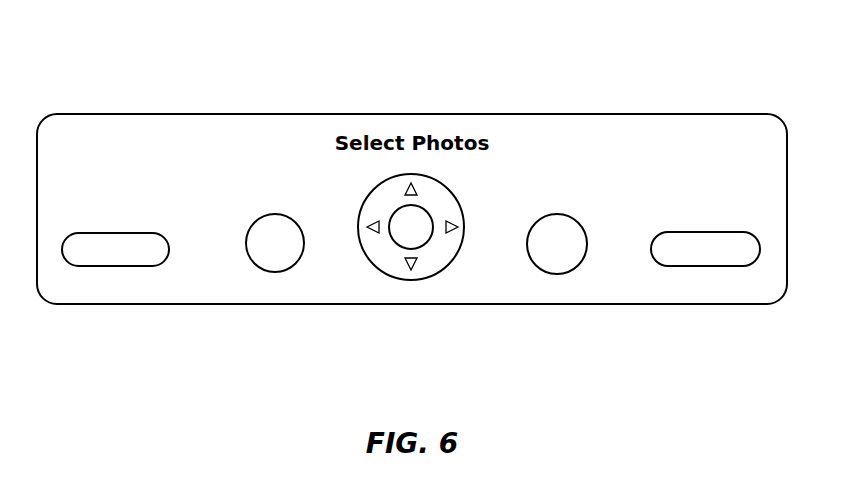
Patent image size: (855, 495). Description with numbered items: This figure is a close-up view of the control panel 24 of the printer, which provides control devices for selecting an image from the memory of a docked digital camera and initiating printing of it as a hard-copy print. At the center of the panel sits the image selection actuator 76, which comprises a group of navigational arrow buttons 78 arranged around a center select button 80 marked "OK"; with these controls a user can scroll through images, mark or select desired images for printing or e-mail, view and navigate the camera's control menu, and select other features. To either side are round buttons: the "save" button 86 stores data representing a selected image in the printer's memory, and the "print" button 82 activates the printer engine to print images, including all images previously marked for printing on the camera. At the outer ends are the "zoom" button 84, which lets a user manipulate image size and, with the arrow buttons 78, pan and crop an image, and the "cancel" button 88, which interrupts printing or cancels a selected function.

The control panel 24 is at (201, 82).
The image selection actuator 76 is at (363, 194).
The navigational arrow buttons 78 is at (447, 224).
The center select button 80 is at (420, 240).
The print button 82 is at (565, 258).
The zoom button 84 is at (133, 257).
The save button 86 is at (277, 256).
The cancel button 88 is at (700, 257).